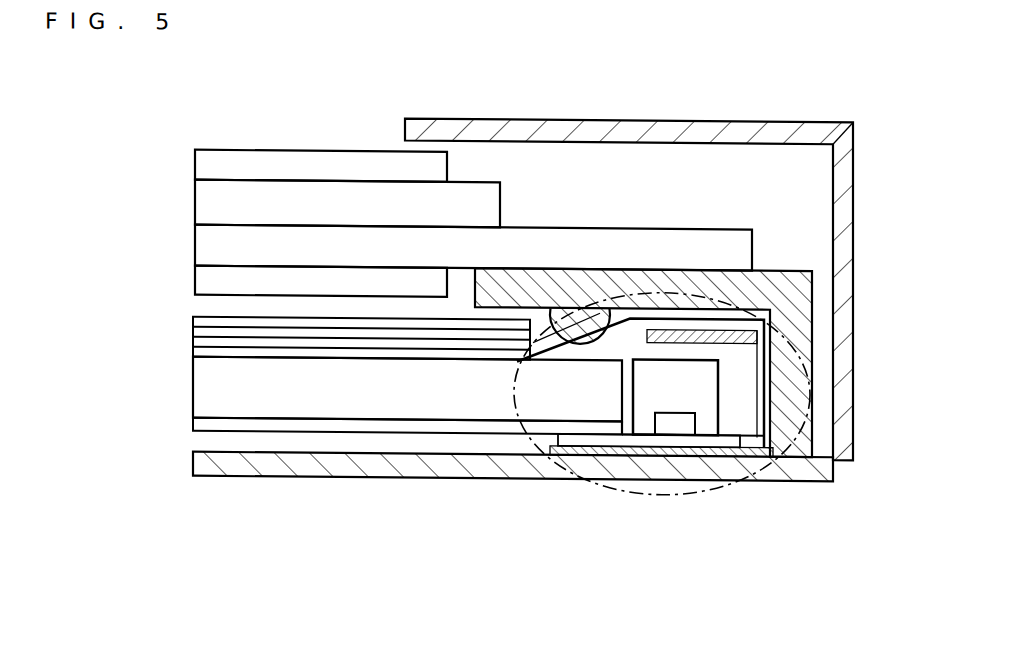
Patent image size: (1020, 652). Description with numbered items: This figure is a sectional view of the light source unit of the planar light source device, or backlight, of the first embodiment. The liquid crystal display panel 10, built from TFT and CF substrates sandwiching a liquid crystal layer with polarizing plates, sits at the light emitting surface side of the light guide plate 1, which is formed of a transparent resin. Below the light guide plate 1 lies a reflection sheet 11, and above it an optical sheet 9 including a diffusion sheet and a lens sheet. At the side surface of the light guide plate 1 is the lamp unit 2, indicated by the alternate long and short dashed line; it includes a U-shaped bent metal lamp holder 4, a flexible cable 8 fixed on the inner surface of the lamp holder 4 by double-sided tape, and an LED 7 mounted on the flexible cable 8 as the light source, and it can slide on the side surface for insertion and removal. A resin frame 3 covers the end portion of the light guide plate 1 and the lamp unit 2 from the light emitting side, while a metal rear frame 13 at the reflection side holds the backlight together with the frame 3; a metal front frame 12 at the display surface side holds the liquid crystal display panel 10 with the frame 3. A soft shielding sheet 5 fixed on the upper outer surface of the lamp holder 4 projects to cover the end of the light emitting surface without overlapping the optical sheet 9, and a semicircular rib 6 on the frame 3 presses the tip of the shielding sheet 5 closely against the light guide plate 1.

The light guide plate 1 is at (203, 391).
The lamp unit 2 is at (656, 492).
The frame 3 is at (631, 295).
The lamp holder 4 is at (605, 457).
The shielding sheet 5 is at (696, 319).
The rib 6 is at (577, 285).
The LED 7 is at (703, 386).
The flexible cable 8 is at (730, 441).
The optical sheet 9 is at (187, 312).
The liquid crystal display panel 10 is at (186, 148).
The reflection sheet 11 is at (220, 423).
The front frame 12 is at (447, 128).
The rear frame 13 is at (357, 457).